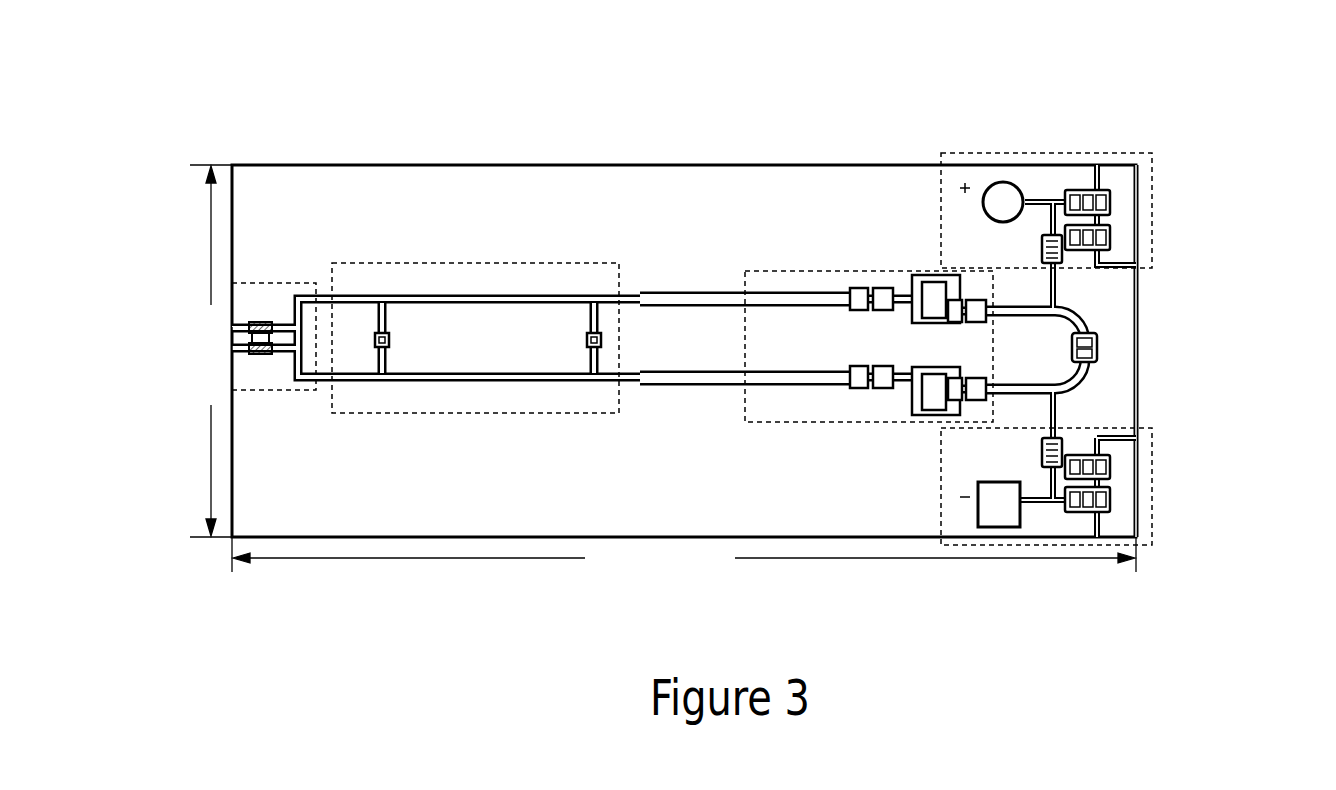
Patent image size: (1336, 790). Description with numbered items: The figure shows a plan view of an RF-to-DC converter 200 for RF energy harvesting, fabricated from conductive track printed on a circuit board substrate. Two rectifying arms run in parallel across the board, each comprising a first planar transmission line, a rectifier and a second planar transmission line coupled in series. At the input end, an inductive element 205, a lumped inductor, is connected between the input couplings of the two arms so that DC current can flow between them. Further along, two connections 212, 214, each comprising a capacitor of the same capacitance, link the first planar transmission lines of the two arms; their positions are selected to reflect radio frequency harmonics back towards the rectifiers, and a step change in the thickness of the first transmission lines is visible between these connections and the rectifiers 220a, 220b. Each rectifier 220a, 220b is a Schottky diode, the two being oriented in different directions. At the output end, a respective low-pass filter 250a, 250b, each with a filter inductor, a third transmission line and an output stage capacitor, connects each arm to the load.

The RF-to-DC converter 200 is at (372, 98).
The inductive element 205 is at (267, 283).
The connection 212 is at (450, 262).
The connection 214 is at (450, 262).
The rectifier 220a is at (930, 278).
The rectifier 220b is at (925, 415).
The low-pass filter 250a is at (1152, 195).
The low-pass filter 250b is at (1152, 465).